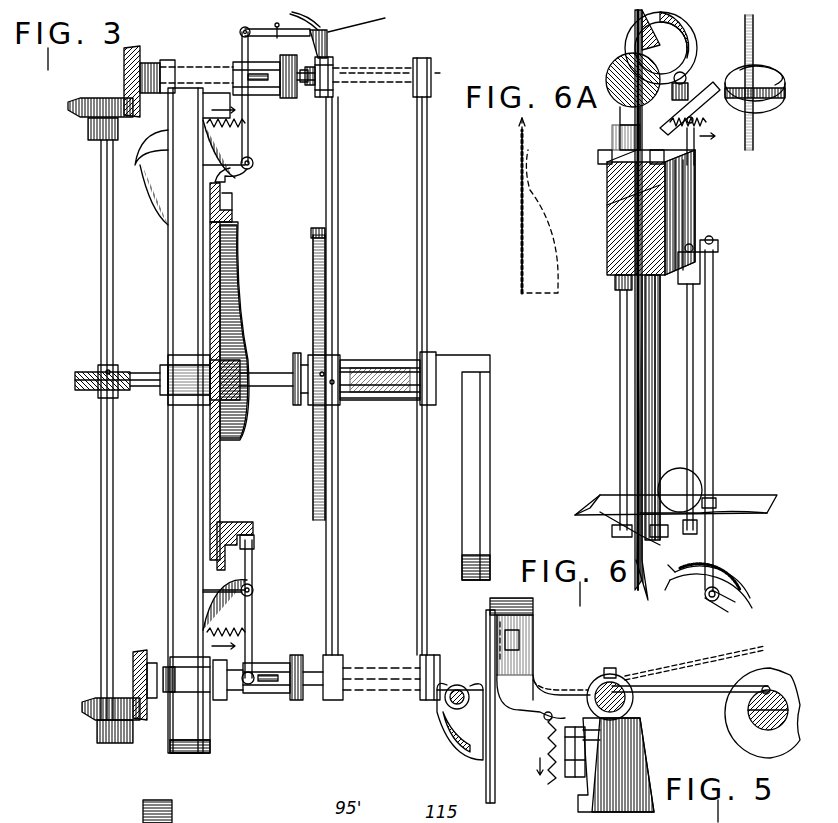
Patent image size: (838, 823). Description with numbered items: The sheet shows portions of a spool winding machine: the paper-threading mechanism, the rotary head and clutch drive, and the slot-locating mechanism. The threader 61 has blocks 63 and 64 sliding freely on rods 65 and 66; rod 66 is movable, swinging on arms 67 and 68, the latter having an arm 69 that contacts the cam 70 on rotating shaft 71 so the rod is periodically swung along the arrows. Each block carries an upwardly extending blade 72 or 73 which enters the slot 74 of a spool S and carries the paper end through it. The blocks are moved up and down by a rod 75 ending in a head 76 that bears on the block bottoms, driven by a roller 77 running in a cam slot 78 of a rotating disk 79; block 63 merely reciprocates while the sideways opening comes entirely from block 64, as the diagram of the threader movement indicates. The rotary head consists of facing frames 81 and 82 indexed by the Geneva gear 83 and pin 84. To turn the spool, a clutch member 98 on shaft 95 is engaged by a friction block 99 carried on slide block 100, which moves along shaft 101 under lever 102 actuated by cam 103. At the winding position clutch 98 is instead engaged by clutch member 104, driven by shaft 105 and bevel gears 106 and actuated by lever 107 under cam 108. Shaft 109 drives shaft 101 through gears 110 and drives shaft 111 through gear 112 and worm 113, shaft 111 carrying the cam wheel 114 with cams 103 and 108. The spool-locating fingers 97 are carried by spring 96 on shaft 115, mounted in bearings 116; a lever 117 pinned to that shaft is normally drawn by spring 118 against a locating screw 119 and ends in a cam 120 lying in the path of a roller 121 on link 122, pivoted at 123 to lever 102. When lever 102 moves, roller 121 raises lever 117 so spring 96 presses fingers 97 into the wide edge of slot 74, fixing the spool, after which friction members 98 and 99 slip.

In FIG. 3, the spool S is at (390, 62).
In FIG. 6, the spool S is at (672, 42).
In FIG. 5, the spool S is at (768, 740).
In FIG. 6, the threader 61 is at (690, 220).
In FIG. 6A, the block 63 is at (522, 240).
In FIG. 6, the block 63 is at (620, 212).
In FIG. 6, the block 64 is at (660, 200).
In FIG. 6, the rod 65 is at (620, 310).
In FIG. 6, the rod 66 is at (660, 302).
In FIG. 6, the arm 67 is at (690, 482).
In FIG. 6, the arm 68 is at (685, 135).
In FIG. 6, the arm 69 is at (700, 85).
In FIG. 6, the cam 70 is at (765, 72).
In FIG. 6, the rotating shaft 71 is at (753, 30).
In FIG. 6, the blade 72 is at (600, 150).
In FIG. 6, the blade 73 is at (607, 182).
In FIG. 6, the slot 74 is at (618, 72).
In FIG. 5, the slot 74 is at (748, 715).
In FIG. 6, the rod 75 is at (713, 342).
In FIG. 6, the head 76 is at (700, 270).
In FIG. 6, the roller 77 is at (722, 588).
In FIG. 6, the cam slot 78 is at (735, 605).
In FIG. 6, the rotating disk 79 is at (716, 588).
In FIG. 3, the frame 81 is at (330, 160).
In FIG. 3, the frame 82 is at (427, 156).
In FIG. 3, the Geneva gear 83 is at (313, 283).
In FIG. 3, the pin 84 is at (311, 236).
In FIG. 3, the shaft 95 is at (330, 62).
In FIG. 5, the spring 96 is at (716, 650).
In FIG. 5, the fingers 97 is at (768, 685).
In FIG. 3, the clutch member 98 is at (292, 90).
In FIG. 3, the friction block 99 is at (290, 98).
In FIG. 3, the slide block 100 is at (270, 95).
In FIG. 3, the shaft 101 is at (225, 75).
In FIG. 3, the lever 102 is at (240, 48).
In FIG. 3, the cam 103 is at (232, 204).
In FIG. 3, the clutch member 104 is at (292, 700).
In FIG. 3, the shaft 105 is at (230, 700).
In FIG. 3, the bevel gears 106 is at (127, 693).
In FIG. 3, the lever 107 is at (252, 593).
In FIG. 3, the cam 108 is at (240, 525).
In FIG. 3, the shaft 109 is at (107, 327).
In FIG. 3, the gears 110 is at (124, 88).
In FIG. 3, the shaft 111 is at (150, 386).
In FIG. 3, the gear 112 is at (75, 380).
In FIG. 3, the worm 113 is at (98, 392).
In FIG. 3, the cam wheel 114 is at (232, 360).
In FIG. 5, the shaft 115 is at (650, 660).
In FIG. 5, the bearings 116 is at (620, 720).
In FIG. 5, the lever 117 is at (572, 690).
In FIG. 5, the spring 118 is at (545, 748).
In FIG. 5, the locating screw 119 is at (590, 748).
In FIG. 3, the cam 120 is at (320, 30).
In FIG. 5, the cam 120 is at (525, 630).
In FIG. 3, the roller 121 is at (371, 17).
In FIG. 5, the roller 121 is at (510, 648).
In FIG. 3, the link 122 is at (270, 22).
In FIG. 3, the pivot 123 is at (240, 30).